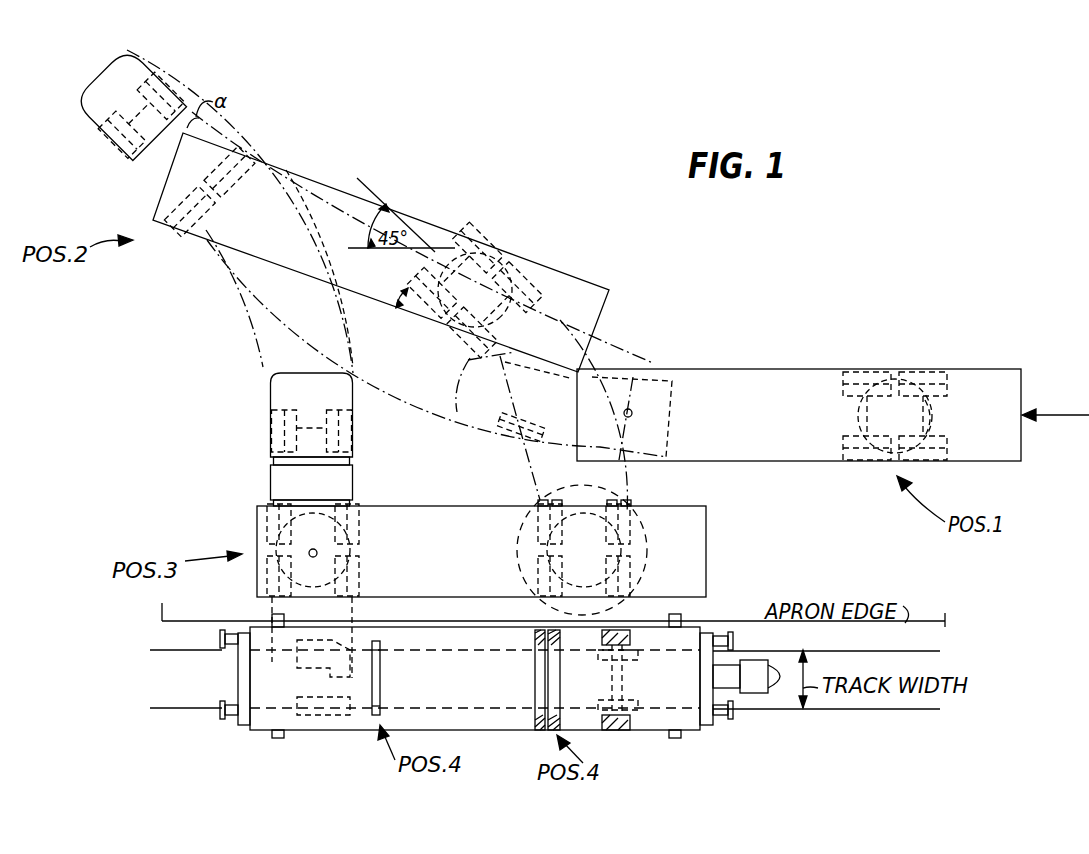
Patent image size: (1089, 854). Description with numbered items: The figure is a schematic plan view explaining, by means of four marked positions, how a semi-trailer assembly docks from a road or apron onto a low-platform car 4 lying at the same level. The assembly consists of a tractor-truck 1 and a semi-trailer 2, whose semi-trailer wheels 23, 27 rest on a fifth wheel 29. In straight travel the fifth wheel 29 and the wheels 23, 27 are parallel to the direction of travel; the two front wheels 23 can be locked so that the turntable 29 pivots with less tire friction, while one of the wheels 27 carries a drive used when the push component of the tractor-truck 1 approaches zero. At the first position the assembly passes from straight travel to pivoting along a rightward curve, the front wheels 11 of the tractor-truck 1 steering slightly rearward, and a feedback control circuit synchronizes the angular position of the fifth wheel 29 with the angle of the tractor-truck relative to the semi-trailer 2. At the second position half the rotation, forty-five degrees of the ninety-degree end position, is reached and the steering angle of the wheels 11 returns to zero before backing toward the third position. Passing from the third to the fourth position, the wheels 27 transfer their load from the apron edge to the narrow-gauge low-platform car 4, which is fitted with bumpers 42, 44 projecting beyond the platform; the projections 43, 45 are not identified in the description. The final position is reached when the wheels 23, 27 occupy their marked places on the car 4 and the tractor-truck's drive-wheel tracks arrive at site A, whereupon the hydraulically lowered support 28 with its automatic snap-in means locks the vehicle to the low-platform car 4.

The tractor-truck 1 is at (90, 100).
The front wheels 11 is at (108, 143).
The semi-trailer 2 is at (1010, 396).
The front wheels of the semi-trailer 23 is at (472, 232).
The semi-trailer wheels 27 is at (512, 265).
The fifth wheel 29 is at (930, 418).
The low-platform car 4 is at (268, 718).
The site A is at (283, 665).
The hydraulically lowered support 28 is at (377, 712).
The bumper 42 is at (272, 620).
The bolt 43 is at (681, 620).
The bumper 44 is at (280, 738).
The bolt 45 is at (681, 738).